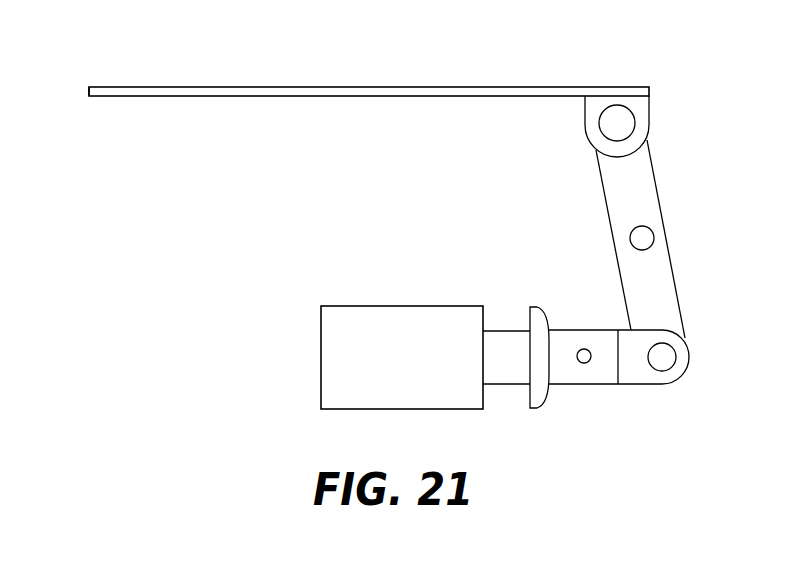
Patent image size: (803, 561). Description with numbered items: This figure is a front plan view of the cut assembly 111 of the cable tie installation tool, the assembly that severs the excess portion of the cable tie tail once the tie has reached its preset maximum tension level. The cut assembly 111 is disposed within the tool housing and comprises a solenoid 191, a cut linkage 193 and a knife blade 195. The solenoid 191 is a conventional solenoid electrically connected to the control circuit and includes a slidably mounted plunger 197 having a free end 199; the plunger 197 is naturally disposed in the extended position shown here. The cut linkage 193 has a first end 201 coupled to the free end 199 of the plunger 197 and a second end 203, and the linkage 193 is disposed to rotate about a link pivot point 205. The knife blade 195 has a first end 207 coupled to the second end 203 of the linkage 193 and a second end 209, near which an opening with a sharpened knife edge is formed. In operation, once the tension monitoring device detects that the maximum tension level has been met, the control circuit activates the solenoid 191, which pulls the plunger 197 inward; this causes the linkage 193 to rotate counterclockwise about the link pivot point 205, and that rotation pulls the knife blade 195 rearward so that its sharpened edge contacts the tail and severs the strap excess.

The cut assembly 111 is at (268, 318).
The solenoid 191 is at (403, 306).
The cut linkage 193 is at (660, 200).
The knife blade 195 is at (345, 87).
The plunger 197 is at (505, 343).
The free end 199 is at (672, 375).
The first end 201 is at (680, 295).
The second end 203 is at (642, 157).
The link pivot point 205 is at (634, 228).
The first end 207 is at (608, 95).
The second end 209 is at (89, 92).